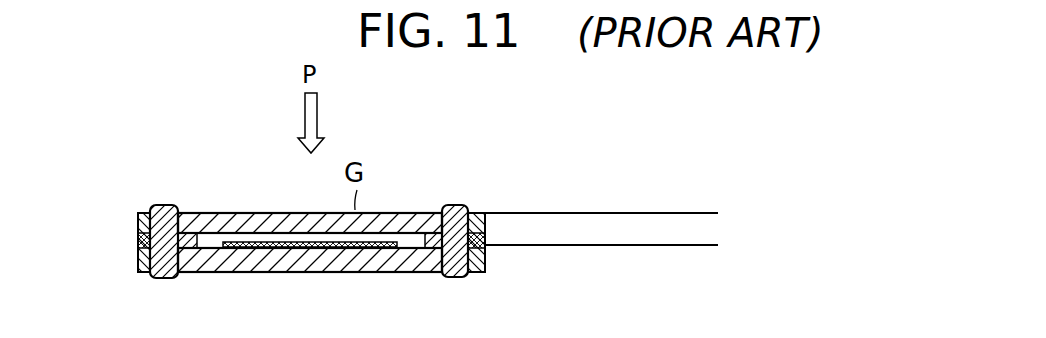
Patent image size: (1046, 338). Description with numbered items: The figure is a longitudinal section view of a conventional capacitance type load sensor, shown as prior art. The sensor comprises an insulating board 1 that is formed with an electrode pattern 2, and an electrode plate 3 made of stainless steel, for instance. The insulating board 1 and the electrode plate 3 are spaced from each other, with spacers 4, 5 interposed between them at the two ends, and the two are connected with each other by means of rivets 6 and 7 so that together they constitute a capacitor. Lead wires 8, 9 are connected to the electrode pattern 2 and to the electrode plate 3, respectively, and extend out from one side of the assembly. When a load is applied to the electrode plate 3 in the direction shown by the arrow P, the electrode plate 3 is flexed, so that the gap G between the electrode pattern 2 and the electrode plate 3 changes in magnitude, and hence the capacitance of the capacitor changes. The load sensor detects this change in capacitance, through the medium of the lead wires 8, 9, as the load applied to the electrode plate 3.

The insulating board 1 is at (257, 263).
The electrode pattern 2 is at (333, 243).
The electrode plate 3 is at (236, 212).
The spacer 4 is at (137, 242).
The spacer 5 is at (488, 245).
The rivet 6 is at (165, 210).
The rivet 7 is at (453, 208).
The lead wire 8 is at (600, 247).
The lead wire 9 is at (598, 213).